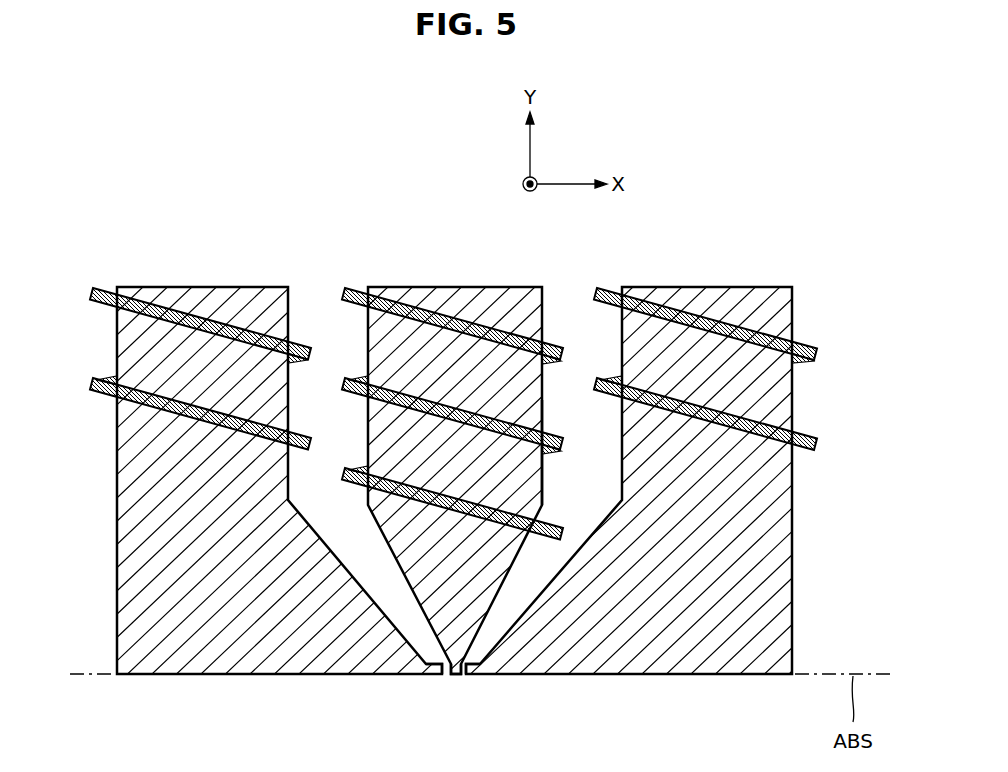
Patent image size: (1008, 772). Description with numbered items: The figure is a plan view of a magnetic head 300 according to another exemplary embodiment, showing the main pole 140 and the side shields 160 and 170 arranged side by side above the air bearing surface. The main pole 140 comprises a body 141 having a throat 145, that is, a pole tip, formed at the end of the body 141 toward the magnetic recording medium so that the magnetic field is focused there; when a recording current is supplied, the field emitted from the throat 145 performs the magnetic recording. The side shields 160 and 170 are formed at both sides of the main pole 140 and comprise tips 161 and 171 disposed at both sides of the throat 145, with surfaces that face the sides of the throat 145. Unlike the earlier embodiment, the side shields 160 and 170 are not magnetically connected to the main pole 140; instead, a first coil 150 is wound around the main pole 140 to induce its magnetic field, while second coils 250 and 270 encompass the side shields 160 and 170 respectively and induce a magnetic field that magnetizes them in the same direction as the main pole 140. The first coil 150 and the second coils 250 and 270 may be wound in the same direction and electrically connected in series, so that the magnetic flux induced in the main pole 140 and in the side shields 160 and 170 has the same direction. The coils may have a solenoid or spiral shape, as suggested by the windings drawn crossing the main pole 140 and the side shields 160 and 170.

The main pole 140 is at (437, 296).
The body 141 is at (527, 493).
The throat 145 is at (456, 676).
The first coil 150 is at (480, 320).
The side shield 160 is at (180, 622).
The tip 161 is at (432, 676).
The side shield 170 is at (742, 631).
The tip 171 is at (474, 677).
The second coil 250 is at (192, 318).
The second coil 270 is at (718, 318).
The magnetic head 300 is at (692, 207).